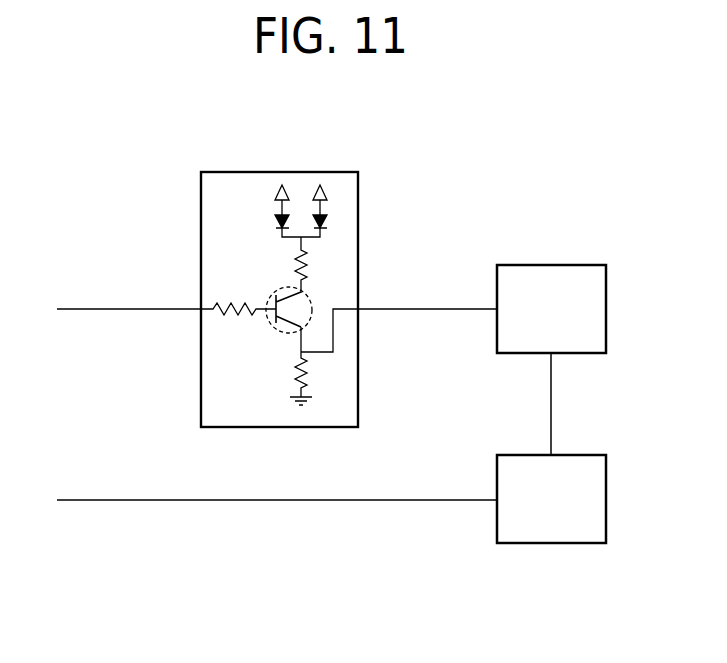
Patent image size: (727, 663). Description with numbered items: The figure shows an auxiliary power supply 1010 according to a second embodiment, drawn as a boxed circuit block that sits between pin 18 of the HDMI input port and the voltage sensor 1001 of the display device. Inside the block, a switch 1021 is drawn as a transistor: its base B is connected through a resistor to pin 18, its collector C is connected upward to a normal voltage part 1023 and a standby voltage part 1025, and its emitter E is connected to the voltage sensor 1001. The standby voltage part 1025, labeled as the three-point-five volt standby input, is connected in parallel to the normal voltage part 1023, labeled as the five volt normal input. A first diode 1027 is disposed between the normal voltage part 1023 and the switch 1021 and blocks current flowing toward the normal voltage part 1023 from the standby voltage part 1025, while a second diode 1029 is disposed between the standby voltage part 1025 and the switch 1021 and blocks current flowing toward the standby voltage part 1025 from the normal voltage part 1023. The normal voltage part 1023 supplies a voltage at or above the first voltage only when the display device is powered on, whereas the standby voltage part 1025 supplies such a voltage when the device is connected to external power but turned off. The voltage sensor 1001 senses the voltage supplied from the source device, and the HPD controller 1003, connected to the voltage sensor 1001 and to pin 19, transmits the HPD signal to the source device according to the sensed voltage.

The pin 18 is at (129, 296).
The pin 19 is at (277, 487).
The voltage sensor 1001 is at (551, 265).
The HPD controller 1003 is at (551, 543).
The auxiliary power supply 1010 is at (300, 172).
The switch 1021 is at (288, 287).
The normal voltage part 1023 is at (316, 183).
The standby voltage part 1025 is at (280, 184).
The first diode 1027 is at (327, 219).
The second diode 1029 is at (275, 220).